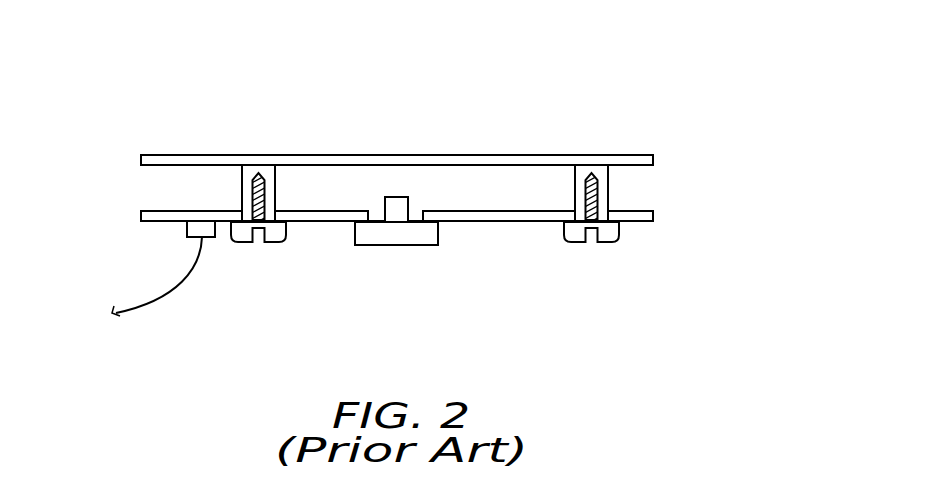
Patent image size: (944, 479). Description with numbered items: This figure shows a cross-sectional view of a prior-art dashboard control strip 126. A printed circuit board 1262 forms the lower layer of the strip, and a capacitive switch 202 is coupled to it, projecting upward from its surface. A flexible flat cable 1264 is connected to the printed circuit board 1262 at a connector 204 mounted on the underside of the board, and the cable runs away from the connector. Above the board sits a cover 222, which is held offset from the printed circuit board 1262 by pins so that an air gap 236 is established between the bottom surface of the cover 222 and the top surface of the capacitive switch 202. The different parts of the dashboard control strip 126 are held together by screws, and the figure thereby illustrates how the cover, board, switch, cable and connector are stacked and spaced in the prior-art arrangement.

The dashboard control strip 126 is at (723, 103).
The cover 222 is at (186, 161).
The printed circuit board 1262 is at (475, 222).
The air gap 236 is at (412, 166).
The capacitive switch 202 is at (388, 245).
The connector 204 is at (186, 238).
The flexible flat cable 1264 is at (170, 302).